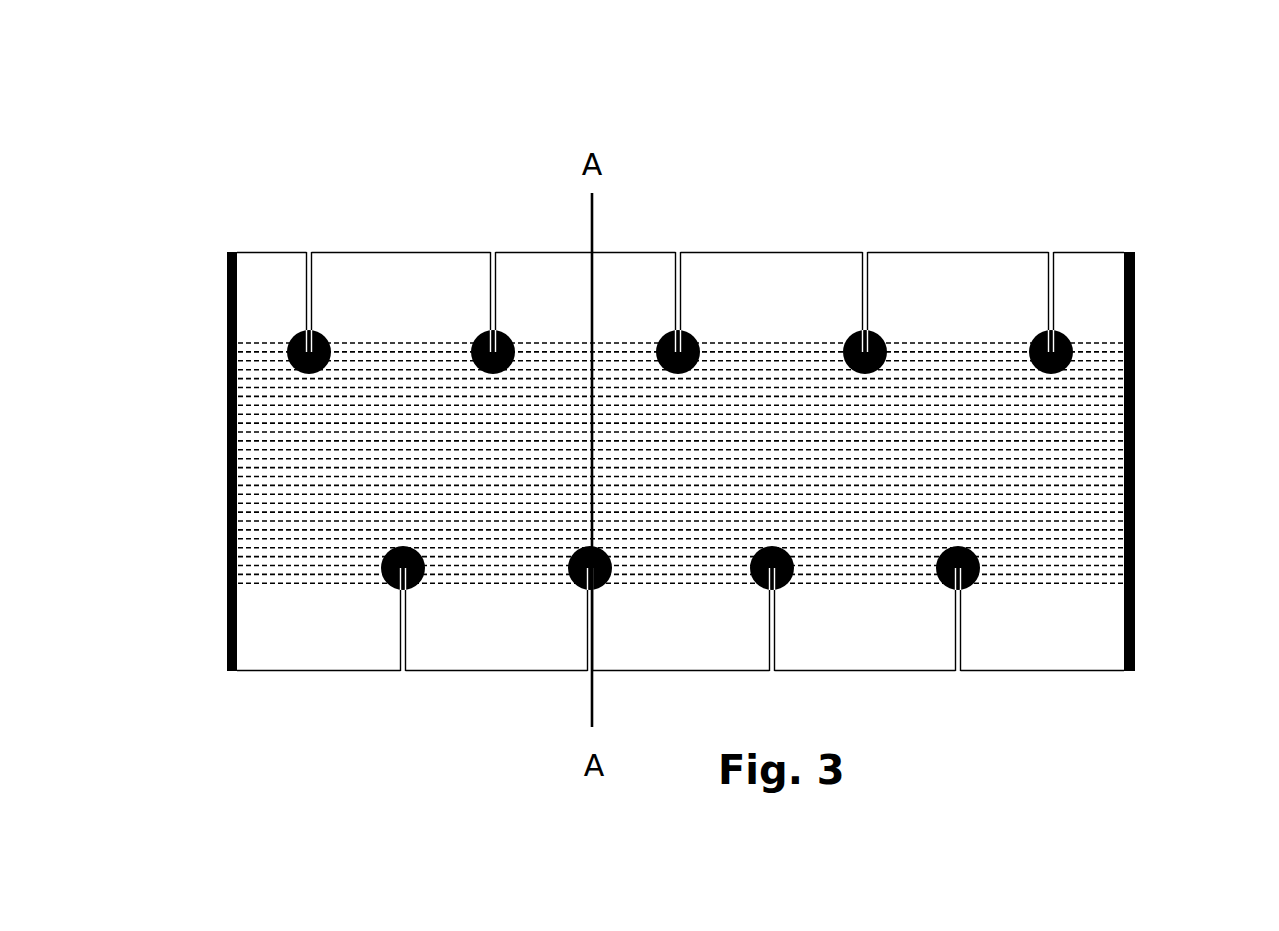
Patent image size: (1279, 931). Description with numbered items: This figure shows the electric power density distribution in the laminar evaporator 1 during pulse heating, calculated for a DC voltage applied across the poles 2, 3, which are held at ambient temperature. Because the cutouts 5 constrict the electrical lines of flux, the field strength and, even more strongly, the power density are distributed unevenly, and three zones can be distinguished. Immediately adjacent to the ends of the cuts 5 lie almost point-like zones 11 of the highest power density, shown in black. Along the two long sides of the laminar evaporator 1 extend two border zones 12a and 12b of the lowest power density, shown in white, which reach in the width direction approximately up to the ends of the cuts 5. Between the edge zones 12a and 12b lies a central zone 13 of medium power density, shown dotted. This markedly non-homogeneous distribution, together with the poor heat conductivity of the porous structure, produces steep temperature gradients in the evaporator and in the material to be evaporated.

The laminar evaporator 1 is at (352, 143).
The pole 2 is at (228, 552).
The pole 3 is at (1135, 553).
The cutouts 5 is at (958, 623).
The zones of highest power density 11 is at (1085, 365).
The border zone of lowest power density 12a is at (947, 295).
The border zone of lowest power density 12b is at (480, 637).
The central zone of medium power density 13 is at (748, 452).